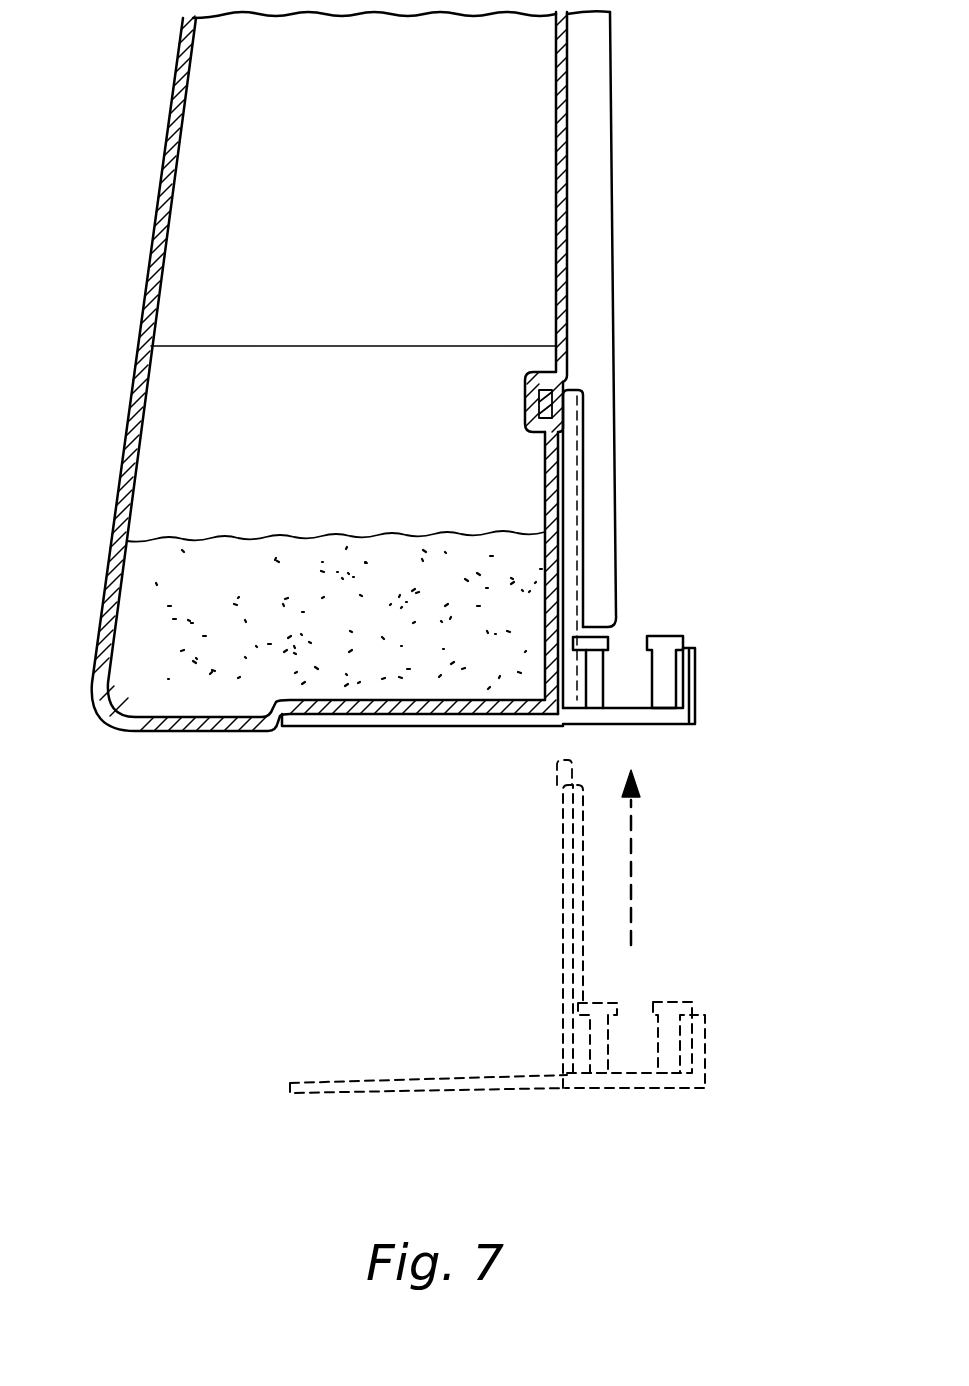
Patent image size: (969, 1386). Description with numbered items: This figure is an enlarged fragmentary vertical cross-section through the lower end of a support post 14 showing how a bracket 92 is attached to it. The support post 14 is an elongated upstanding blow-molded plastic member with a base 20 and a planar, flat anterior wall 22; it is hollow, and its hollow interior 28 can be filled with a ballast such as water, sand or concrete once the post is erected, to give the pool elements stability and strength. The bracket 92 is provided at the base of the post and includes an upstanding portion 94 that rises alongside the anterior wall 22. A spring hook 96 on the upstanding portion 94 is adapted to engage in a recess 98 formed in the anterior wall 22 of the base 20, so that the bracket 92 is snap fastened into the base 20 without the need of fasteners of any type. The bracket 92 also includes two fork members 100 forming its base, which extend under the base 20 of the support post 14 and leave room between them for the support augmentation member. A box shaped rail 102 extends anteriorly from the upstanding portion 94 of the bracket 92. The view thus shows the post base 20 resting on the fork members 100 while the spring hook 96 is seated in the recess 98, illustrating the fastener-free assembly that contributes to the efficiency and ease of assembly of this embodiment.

The support post 14 is at (319, 371).
The base 20 is at (97, 620).
The anterior wall 22 is at (545, 548).
The hollow interior 28 is at (527, 125).
The bracket 92 is at (670, 630).
The upstanding portion 94 is at (563, 527).
The spring hook 96 is at (548, 407).
The recess 98 is at (548, 398).
The fork members 100 is at (367, 720).
The box shaped rail 102 is at (680, 678).